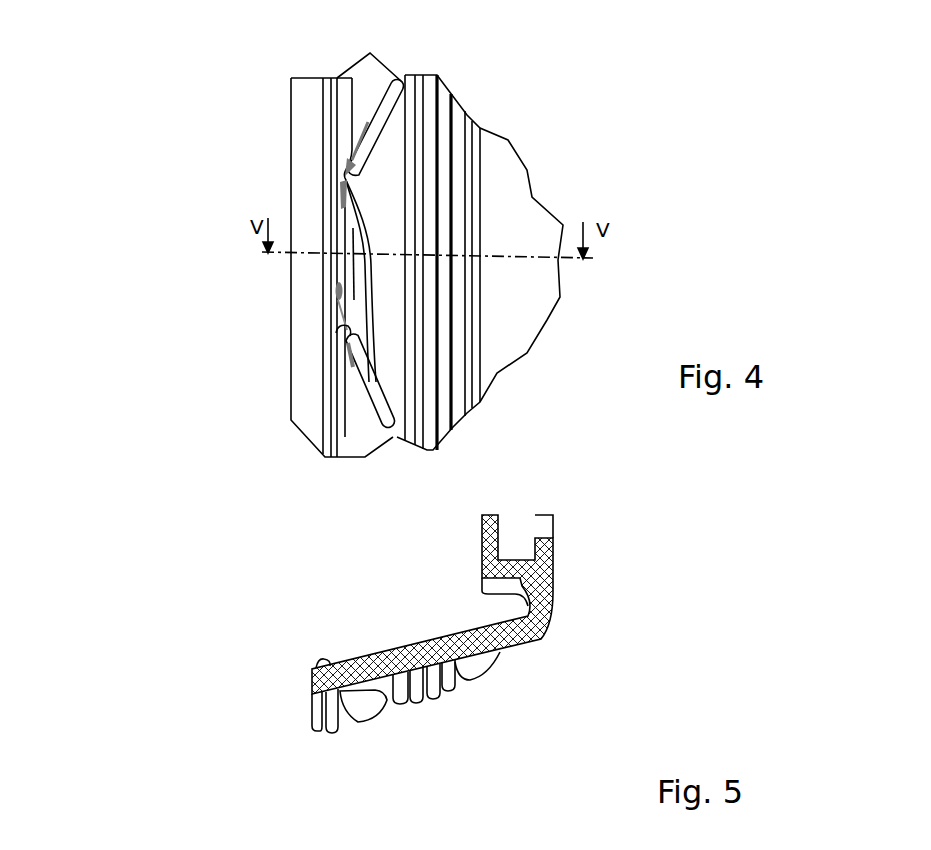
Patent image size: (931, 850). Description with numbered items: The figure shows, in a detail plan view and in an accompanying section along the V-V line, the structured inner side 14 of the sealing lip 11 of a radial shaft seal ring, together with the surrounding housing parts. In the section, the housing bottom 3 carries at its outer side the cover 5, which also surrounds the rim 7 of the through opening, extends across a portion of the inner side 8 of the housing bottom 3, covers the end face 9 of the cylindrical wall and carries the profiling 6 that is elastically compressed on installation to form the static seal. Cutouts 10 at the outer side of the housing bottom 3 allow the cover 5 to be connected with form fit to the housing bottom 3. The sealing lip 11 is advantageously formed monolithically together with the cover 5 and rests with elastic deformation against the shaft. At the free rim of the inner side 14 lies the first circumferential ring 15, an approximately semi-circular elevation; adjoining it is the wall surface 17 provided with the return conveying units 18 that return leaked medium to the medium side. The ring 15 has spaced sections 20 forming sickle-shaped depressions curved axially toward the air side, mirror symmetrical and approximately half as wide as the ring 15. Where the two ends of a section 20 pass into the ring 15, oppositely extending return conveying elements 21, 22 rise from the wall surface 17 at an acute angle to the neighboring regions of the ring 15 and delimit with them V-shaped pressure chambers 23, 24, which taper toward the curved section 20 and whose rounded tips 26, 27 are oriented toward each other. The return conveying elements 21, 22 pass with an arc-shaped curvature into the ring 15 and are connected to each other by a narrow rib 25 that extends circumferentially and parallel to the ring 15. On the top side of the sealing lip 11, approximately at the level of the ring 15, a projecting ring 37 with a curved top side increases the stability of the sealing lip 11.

In FIG. 5, the housing bottom 3 is at (513, 537).
In FIG. 5, the cover 5 is at (490, 535).
In FIG. 4, the profiling 6 is at (460, 0).
In FIG. 5, the rim 7 is at (547, 587).
In FIG. 4, the inner side 8 is at (289, 10).
In FIG. 4, the end face 9 is at (380, 0).
In FIG. 5, the cutouts 10 is at (547, 528).
In FIG. 5, the sealing lip 11 is at (383, 650).
In FIG. 5, the inner side 14 is at (503, 650).
In FIG. 4, the first circumferential ring 15 is at (347, 111).
In FIG. 4, the wall surface 17 is at (343, 272).
In FIG. 5, the wall surface 17 is at (380, 693).
In FIG. 4, the return conveying units 18 is at (383, 136).
In FIG. 4, the sections 20 is at (353, 218).
In FIG. 5, the sections 20 is at (353, 687).
In FIG. 4, the return conveying element 21 is at (390, 105).
In FIG. 4, the return conveying element 22 is at (373, 383).
In FIG. 4, the pressure chamber 23 is at (367, 123).
In FIG. 4, the pressure chamber 24 is at (343, 330).
In FIG. 4, the rib 25 is at (395, 233).
In FIG. 4, the rounded tip 26 is at (358, 170).
In FIG. 4, the rounded tip 27 is at (355, 377).
In FIG. 5, the projecting ring 37 is at (318, 662).